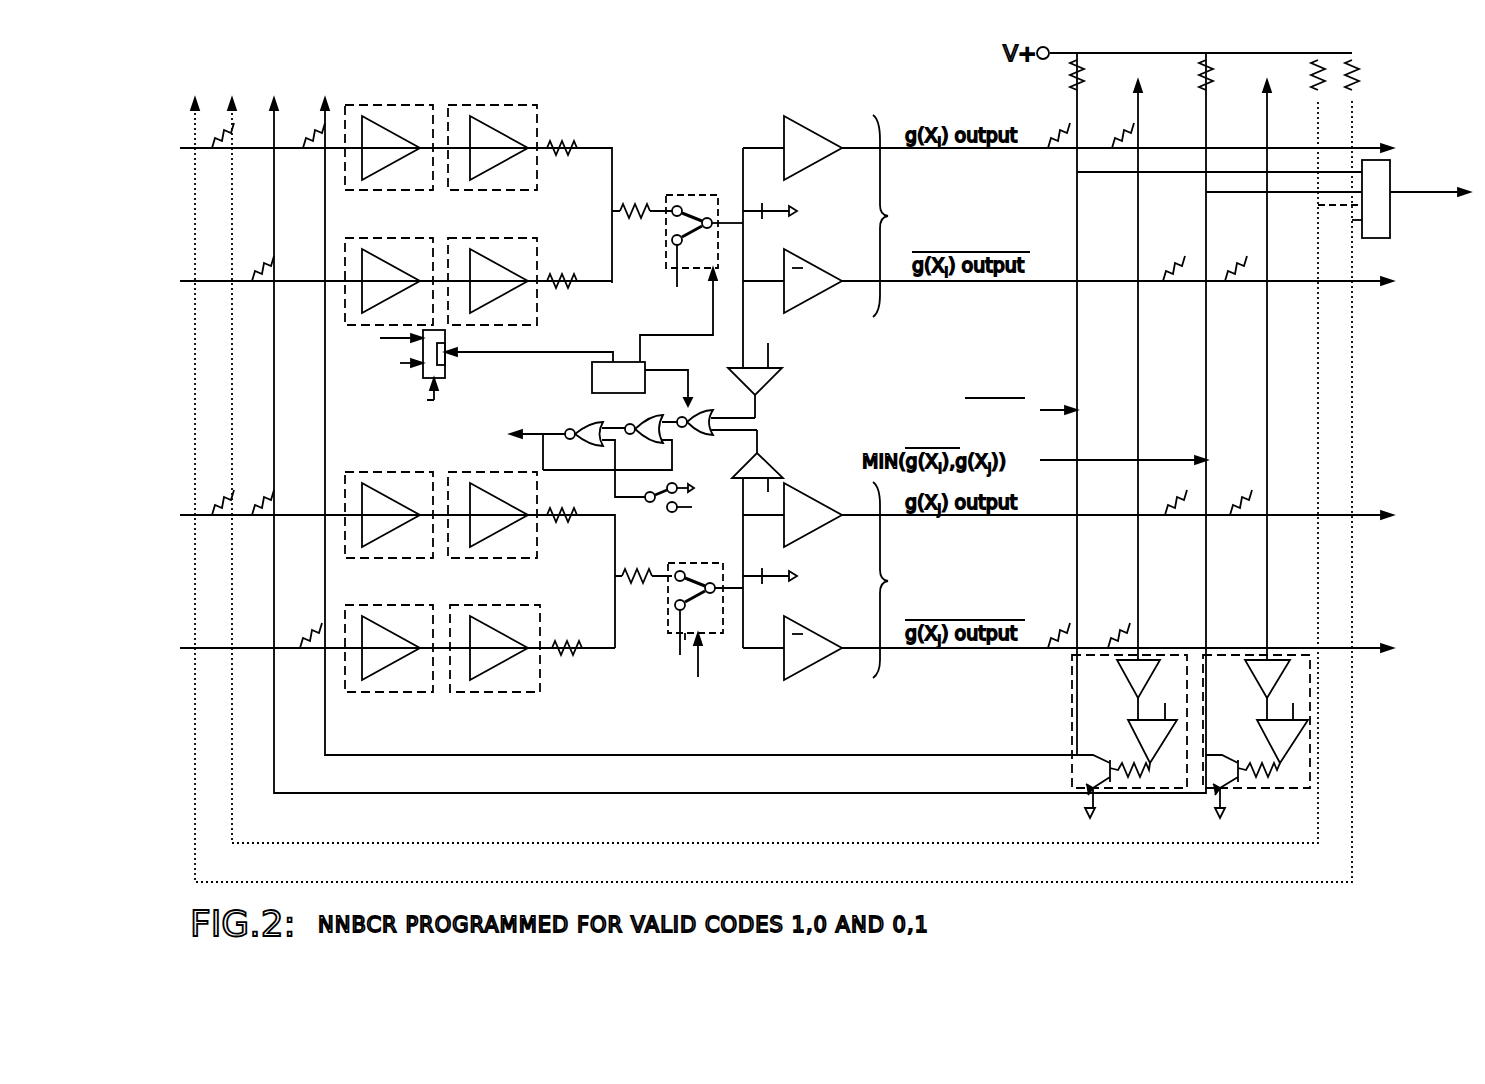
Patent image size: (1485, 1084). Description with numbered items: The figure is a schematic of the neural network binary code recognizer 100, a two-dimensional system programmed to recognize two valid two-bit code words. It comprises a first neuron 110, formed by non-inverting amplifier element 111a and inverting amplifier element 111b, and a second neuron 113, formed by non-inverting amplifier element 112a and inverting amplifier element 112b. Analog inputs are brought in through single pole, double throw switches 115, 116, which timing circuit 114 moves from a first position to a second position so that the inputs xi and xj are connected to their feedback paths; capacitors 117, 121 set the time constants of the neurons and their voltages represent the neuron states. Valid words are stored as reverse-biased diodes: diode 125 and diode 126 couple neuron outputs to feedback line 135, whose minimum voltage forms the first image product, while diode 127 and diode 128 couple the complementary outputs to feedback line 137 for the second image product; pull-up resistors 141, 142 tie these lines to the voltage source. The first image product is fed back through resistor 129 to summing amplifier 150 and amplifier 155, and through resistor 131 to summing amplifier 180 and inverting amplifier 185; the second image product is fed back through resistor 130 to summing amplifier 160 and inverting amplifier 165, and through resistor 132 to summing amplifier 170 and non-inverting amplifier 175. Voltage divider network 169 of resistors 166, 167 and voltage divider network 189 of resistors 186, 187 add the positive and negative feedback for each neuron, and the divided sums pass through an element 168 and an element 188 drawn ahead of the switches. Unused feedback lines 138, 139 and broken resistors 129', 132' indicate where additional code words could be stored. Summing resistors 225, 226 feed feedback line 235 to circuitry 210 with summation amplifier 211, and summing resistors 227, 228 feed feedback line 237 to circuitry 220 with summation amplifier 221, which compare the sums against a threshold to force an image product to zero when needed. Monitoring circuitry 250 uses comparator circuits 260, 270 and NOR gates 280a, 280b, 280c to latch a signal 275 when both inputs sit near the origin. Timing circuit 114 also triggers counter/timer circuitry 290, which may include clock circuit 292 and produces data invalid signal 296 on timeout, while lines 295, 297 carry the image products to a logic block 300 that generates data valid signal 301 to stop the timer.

The neural network binary code recognizer 100 is at (696, 118).
The first neuron 110 is at (905, 216).
The non-inverting amplifier element 111a is at (808, 135).
The inverting amplifier element 111b is at (808, 268).
The non-inverting amplifier element 112a is at (800, 540).
The inverting amplifier element 112b is at (812, 628).
The second neuron 113 is at (908, 580).
The timing circuit 114 is at (597, 498).
The switch 115 is at (688, 195).
The switch 116 is at (720, 633).
The capacitor 117 is at (770, 205).
The capacitor 121 is at (775, 580).
The reverse-biased diode 125 is at (1062, 125).
The reverse-biased diode 126 is at (1060, 635).
The reverse-biased diode 127 is at (1178, 258).
The reverse-biased diode 128 is at (1178, 505).
The resistor 129 is at (302, 105).
The resistor 129' is at (365, 201).
The resistor 130 is at (252, 270).
The resistor 131 is at (305, 635).
The resistor 132 is at (207, 525).
The resistor 132' is at (371, 564).
The feedback line 135 is at (1077, 200).
The feedback line 137 is at (1206, 368).
The unused feedback line 138 is at (1318, 402).
The unused feedback line 139 is at (1352, 362).
The pull-up resistor 141 is at (1085, 78).
The pull-up resistor 142 is at (1210, 78).
The summing amplifier 150 is at (375, 105).
The amplifier 155 is at (485, 105).
The summing amplifier 160 is at (370, 238).
The inverting amplifier 165 is at (505, 238).
The resistor 166 is at (560, 145).
The resistor 167 is at (575, 285).
The resistor 168 is at (652, 205).
The voltage divider network 169 is at (590, 148).
The summing amplifier 170 is at (395, 472).
The non-inverting amplifier 175 is at (530, 558).
The summing amplifier 180 is at (385, 605).
The inverting amplifier 185 is at (508, 692).
The resistor 186 is at (565, 518).
The resistor 187 is at (570, 650).
The resistor 188 is at (630, 572).
The voltage divider network 189 is at (612, 592).
The circuitry 210 is at (1175, 655).
The summation amplifier 211 is at (1117, 668).
The circuitry 220 is at (1280, 655).
The summation amplifier 221 is at (1290, 665).
The summing resistor 225 is at (1122, 130).
The summing resistor 226 is at (1120, 635).
The summing resistor 227 is at (1240, 258).
The summing resistor 228 is at (1238, 500).
The feedback line 235 is at (1138, 368).
The feedback line 237 is at (1267, 555).
The monitoring circuitry 250 is at (752, 423).
The comparator circuit 260 is at (782, 376).
The comparator circuit 270 is at (770, 470).
The signal 275 is at (540, 430).
The NOR gate 280a is at (592, 448).
The NOR gate 280b is at (635, 420).
The NOR gate 280c is at (700, 435).
The counter/timer circuitry 290 is at (386, 352).
The clock circuit 292 is at (445, 352).
The line 295 is at (445, 365).
The data invalid signal 296 is at (423, 370).
The line 297 is at (1290, 192).
The data valid block 300 is at (1385, 162).
The data valid signal 301 is at (1395, 252).